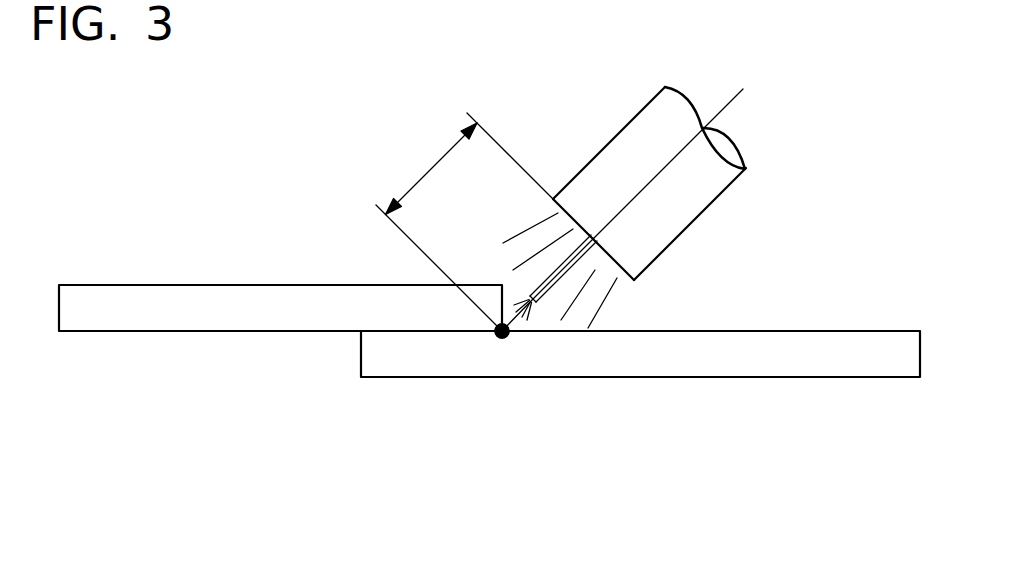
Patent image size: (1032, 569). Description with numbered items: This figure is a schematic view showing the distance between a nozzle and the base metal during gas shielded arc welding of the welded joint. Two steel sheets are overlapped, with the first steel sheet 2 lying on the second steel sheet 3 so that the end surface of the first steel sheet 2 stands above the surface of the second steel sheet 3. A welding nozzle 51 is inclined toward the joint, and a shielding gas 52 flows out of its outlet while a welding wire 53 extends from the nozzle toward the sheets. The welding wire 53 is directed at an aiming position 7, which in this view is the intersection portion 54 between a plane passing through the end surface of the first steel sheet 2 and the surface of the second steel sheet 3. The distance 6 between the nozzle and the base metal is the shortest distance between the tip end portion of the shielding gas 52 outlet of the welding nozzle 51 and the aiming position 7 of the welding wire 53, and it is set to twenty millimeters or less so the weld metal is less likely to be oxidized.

The first steel sheet 2 is at (145, 303).
The second steel sheet 3 is at (863, 360).
The distance between nozzle and base metal 6 is at (432, 168).
The aiming position 7 is at (510, 337).
The welding nozzle 51 is at (623, 155).
The shielding gas 52 is at (605, 302).
The welding wire 53 is at (558, 265).
The intersection portion 54 is at (498, 340).